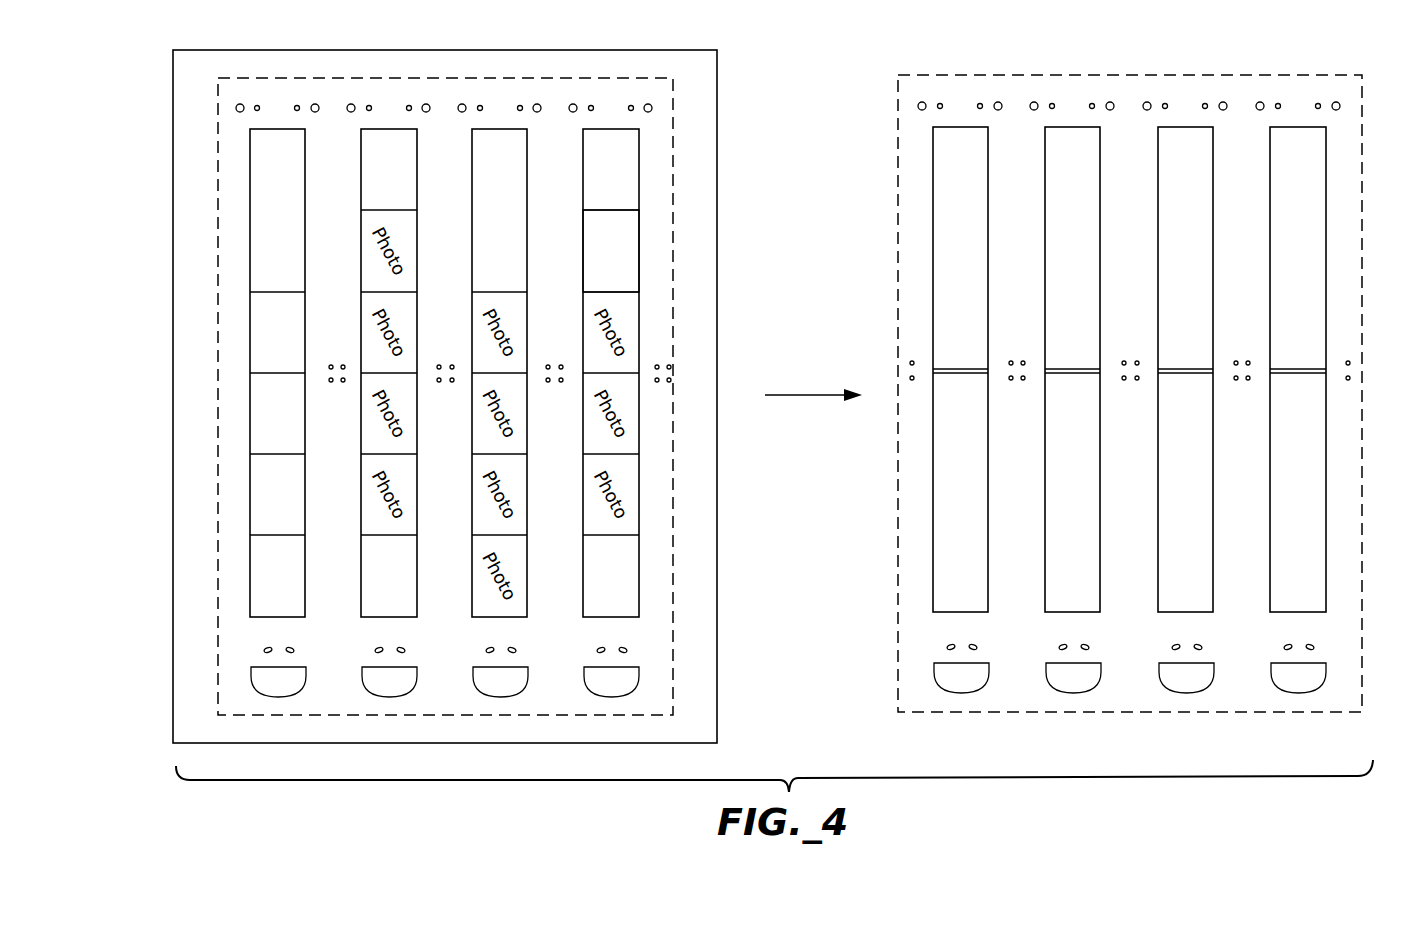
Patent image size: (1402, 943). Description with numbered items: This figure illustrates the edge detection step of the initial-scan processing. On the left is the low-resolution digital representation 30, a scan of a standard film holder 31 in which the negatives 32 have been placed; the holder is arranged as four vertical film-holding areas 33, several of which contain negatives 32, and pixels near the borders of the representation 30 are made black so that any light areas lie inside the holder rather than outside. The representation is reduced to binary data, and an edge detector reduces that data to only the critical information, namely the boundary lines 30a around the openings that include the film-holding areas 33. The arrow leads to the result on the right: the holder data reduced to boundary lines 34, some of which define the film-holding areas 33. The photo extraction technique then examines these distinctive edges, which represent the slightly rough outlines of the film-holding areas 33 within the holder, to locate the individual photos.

The low-resolution digital representation 30 is at (737, 712).
The boundary lines around the openings 30a is at (1150, 421).
The film holder 31 is at (717, 144).
The negatives 32 is at (625, 255).
The film-holding areas 33 is at (288, 189).
The boundary lines 34 is at (1326, 222).